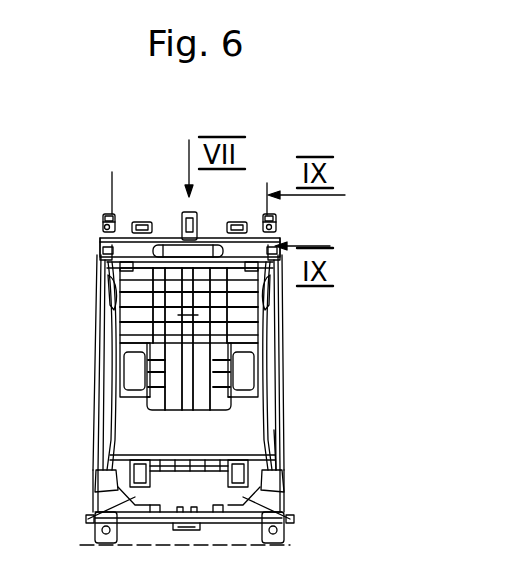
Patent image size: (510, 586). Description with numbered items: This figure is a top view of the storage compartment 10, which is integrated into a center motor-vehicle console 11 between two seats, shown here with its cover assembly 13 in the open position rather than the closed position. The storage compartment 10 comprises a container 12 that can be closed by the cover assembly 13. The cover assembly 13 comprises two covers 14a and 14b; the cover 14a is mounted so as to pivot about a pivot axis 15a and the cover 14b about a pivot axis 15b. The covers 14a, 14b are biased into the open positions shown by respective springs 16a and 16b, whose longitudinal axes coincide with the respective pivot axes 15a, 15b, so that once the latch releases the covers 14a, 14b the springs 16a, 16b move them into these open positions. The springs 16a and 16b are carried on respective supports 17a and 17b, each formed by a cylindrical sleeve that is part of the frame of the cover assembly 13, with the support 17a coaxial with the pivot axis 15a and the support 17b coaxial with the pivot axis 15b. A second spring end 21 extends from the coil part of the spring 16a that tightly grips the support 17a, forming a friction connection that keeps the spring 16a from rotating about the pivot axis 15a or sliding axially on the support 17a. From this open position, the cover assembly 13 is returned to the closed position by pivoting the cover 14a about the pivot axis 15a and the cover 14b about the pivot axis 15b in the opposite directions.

The storage compartment 10 is at (265, 450).
The center motor-vehicle console 11 is at (372, 321).
The container 12 is at (255, 370).
The cover assembly 13 is at (272, 420).
The cover 14a is at (270, 330).
The cover 14b is at (95, 350).
The pivot axis 15a is at (280, 215).
The pivot axis 15b is at (113, 197).
The spring 16a is at (278, 229).
The spring 16b is at (100, 240).
The support 17a is at (266, 214).
The support 17b is at (105, 213).
The second spring end 21 is at (101, 218).